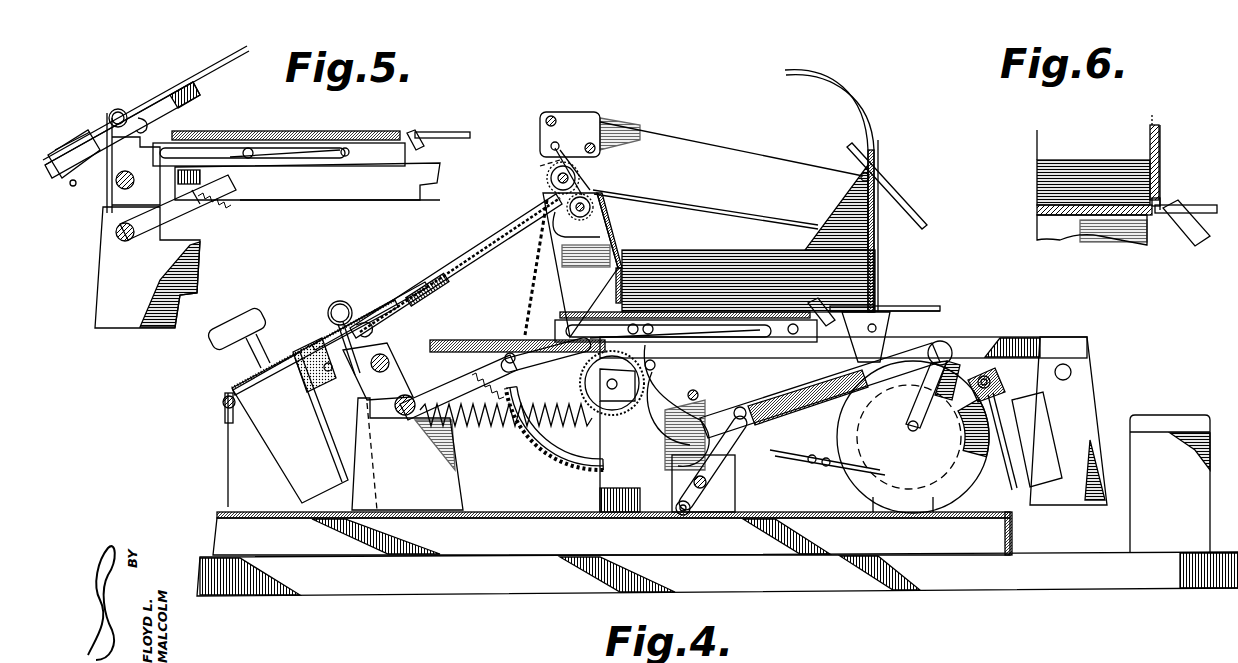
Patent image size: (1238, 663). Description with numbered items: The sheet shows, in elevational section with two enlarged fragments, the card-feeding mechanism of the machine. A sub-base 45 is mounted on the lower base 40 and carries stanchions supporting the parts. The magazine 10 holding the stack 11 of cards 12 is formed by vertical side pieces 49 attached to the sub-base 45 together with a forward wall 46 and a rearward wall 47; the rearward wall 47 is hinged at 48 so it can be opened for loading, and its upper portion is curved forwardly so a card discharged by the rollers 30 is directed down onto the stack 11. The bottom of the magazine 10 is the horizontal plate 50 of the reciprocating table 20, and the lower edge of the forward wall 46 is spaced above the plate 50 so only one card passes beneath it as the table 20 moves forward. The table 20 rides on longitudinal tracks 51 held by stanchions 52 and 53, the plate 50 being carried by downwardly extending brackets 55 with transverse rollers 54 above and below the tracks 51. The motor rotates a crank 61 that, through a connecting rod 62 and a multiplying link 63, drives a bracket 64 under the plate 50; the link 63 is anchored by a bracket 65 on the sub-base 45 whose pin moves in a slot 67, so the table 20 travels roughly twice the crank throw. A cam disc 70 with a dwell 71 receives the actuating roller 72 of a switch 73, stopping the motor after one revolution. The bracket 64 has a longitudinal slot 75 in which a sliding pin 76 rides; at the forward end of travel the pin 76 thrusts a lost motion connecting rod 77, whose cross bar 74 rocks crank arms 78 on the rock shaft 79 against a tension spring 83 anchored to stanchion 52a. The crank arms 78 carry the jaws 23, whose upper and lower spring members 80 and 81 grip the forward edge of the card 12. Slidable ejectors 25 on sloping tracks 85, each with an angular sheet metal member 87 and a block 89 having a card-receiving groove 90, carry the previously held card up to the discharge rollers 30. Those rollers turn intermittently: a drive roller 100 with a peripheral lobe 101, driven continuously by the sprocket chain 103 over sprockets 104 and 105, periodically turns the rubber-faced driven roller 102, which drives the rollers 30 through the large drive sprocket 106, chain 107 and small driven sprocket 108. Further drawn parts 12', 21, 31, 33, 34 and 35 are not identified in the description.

In FIG. 6, the magazine 10 is at (1165, 136).
In FIG. 4, the magazine 10 is at (880, 255).
In FIG. 6, the stack of cards 11 is at (1092, 157).
In FIG. 4, the stack of cards 11 is at (706, 248).
In FIG. 5, the cards 12 is at (221, 105).
In FIG. 4, the cards 12 is at (633, 250).
In FIG. 4, the belt chain 12' is at (460, 265).
In FIG. 5, the reciprocating table 20 is at (450, 130).
In FIG. 6, the reciprocating table 20 is at (1034, 210).
In FIG. 4, the reciprocating table 20 is at (892, 302).
In FIG. 5, the stop 21 is at (424, 132).
In FIG. 6, the stop 21 is at (1200, 238).
In FIG. 4, the stop 21 is at (834, 326).
In FIG. 5, the card-receiving jaws 23 is at (104, 118).
In FIG. 4, the card-receiving jaws 23 is at (348, 296).
In FIG. 4, the slidable ejectors 25 is at (305, 322).
In FIG. 4, the discharge rollers 30 is at (546, 180).
In FIG. 4, the pulley 31 is at (592, 197).
In FIG. 4, the bracket 33 is at (580, 108).
In FIG. 4, the cord 34 is at (575, 162).
In FIG. 4, the handle 35 is at (208, 335).
In FIG. 4, the lower base 40 is at (955, 580).
In FIG. 4, the sub-base 45 is at (1000, 514).
In FIG. 4, the forward transverse wall 46 is at (612, 226).
In FIG. 6, the rearward wall 47 is at (1160, 152).
In FIG. 4, the rearward wall 47 is at (870, 112).
In FIG. 4, the hinge 48 is at (860, 178).
In FIG. 4, the vertical side pieces 49 is at (722, 150).
In FIG. 6, the horizontal plate 50 is at (1200, 204).
In FIG. 4, the horizontal plate 50 is at (928, 305).
In FIG. 5, the longitudinal tracks 51 is at (395, 180).
In FIG. 4, the longitudinal tracks 51 is at (998, 337).
In FIG. 4, the vertical stanchion 52 is at (1083, 374).
In FIG. 4, the stanchion 52a is at (640, 500).
In FIG. 4, the vertical stanchion 53 is at (445, 343).
In FIG. 4, the transverse rollers 54 is at (654, 372).
In FIG. 5, the downwardly extending brackets 55 is at (252, 170).
In FIG. 4, the downwardly extending brackets 55 is at (668, 352).
In FIG. 4, the crank 61 is at (915, 404).
In FIG. 4, the connecting rod 62 is at (805, 402).
In FIG. 4, the multiplying link 63 is at (770, 380).
In FIG. 5, the bracket 64 is at (358, 168).
In FIG. 4, the bracket 64 is at (709, 393).
In FIG. 4, the bracket 65 is at (735, 492).
In FIG. 4, the slot 67 is at (690, 514).
In FIG. 4, the cam disc 70 is at (845, 436).
In FIG. 4, the dwell 71 is at (985, 370).
In FIG. 4, the actuating roller 72 is at (992, 384).
In FIG. 4, the switch 73 is at (1038, 412).
In FIG. 5, the cross bar 74 is at (116, 236).
In FIG. 4, the cross bar 74 is at (405, 418).
In FIG. 5, the longitudinal slot 75 is at (300, 158).
In FIG. 4, the longitudinal slot 75 is at (690, 345).
In FIG. 5, the sliding pin 76 is at (350, 150).
In FIG. 4, the sliding pin 76 is at (628, 327).
In FIG. 5, the lost motion connecting rod 77 is at (200, 212).
In FIG. 4, the lost motion connecting rod 77 is at (480, 370).
In FIG. 5, the crank arms 78 is at (118, 208).
In FIG. 4, the crank arms 78 is at (388, 365).
In FIG. 5, the transverse rock shaft 79 is at (134, 182).
In FIG. 4, the transverse rock shaft 79 is at (390, 355).
In FIG. 5, the upper spring member 80 is at (118, 108).
In FIG. 4, the upper spring member 80 is at (340, 300).
In FIG. 5, the lower spring member 81 is at (140, 114).
In FIG. 4, the lower spring member 81 is at (370, 322).
In FIG. 4, the tension spring 83 is at (478, 422).
In FIG. 4, the sloping tracks 85 is at (438, 285).
In FIG. 5, the angular sheet metal member 87 is at (96, 138).
In FIG. 5, the block 89 is at (70, 140).
In FIG. 4, the block 89 is at (318, 330).
In FIG. 5, the card-receiving groove 90 is at (107, 196).
In FIG. 4, the card-receiving groove 90 is at (350, 374).
In FIG. 4, the drive roller 100 is at (680, 440).
In FIG. 4, the peripheral lobe 101 is at (642, 420).
In FIG. 4, the rubber-faced driven roller 102 is at (592, 377).
In FIG. 4, the sprocket chain 103 is at (812, 465).
In FIG. 4, the sprocket 104 is at (935, 513).
In FIG. 4, the sprocket 105 is at (735, 425).
In FIG. 4, the drive sprocket 106 is at (520, 395).
In FIG. 4, the chain 107 is at (526, 300).
In FIG. 4, the driven sprocket 108 is at (540, 166).